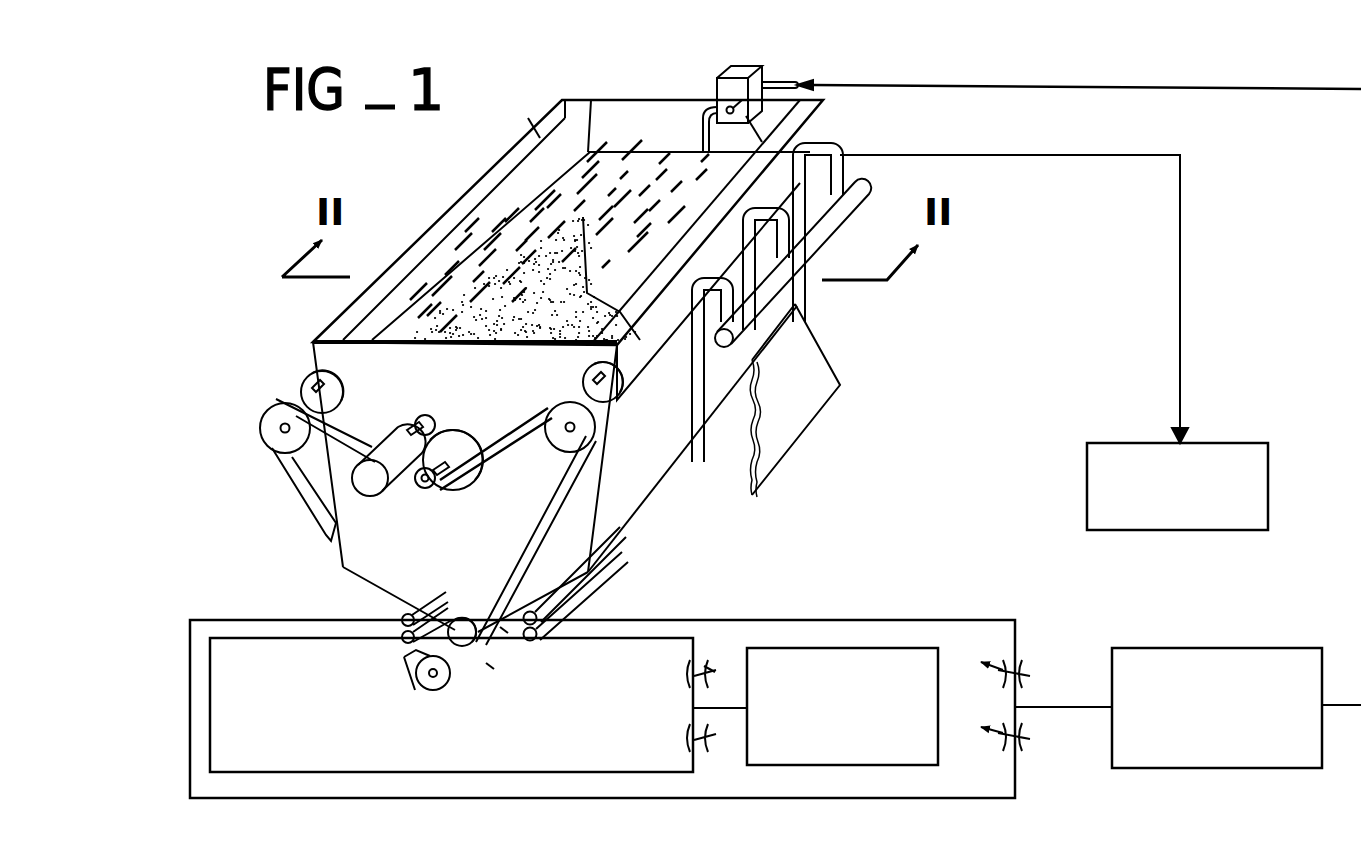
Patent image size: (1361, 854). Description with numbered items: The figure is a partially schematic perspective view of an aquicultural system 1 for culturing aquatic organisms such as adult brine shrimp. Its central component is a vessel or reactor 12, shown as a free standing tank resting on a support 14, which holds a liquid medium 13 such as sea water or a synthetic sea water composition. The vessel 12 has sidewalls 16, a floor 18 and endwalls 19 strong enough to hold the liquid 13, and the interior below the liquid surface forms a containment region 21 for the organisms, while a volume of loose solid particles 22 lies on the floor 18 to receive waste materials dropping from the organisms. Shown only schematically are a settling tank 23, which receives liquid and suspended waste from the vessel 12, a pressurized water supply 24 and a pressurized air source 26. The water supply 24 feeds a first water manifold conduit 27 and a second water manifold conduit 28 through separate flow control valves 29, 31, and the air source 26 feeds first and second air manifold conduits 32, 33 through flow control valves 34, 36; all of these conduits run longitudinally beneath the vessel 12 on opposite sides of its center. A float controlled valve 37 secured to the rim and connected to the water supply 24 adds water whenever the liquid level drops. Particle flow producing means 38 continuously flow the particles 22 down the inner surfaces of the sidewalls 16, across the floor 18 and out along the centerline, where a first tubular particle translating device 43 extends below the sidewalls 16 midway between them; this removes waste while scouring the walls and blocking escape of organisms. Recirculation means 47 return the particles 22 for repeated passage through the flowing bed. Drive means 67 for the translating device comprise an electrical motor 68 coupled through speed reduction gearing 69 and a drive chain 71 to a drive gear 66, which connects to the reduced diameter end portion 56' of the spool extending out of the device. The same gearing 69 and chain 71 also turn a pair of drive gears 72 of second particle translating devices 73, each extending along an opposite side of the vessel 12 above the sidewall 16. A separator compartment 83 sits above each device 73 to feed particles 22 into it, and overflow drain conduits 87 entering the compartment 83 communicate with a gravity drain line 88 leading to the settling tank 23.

The apparatus 1 is at (1310, 80).
The vessel or reactor 12 is at (478, 151).
The liquid medium 13 is at (617, 165).
The support 14 is at (808, 394).
The sidewalls 16 is at (650, 469).
The floor 18 is at (370, 590).
The endwalls 19 is at (506, 377).
The containment region 21 is at (634, 255).
The loose solid particles 22 is at (526, 279).
The settling tank 23 is at (1236, 443).
The pressurized water supply 24 is at (1268, 648).
The pressurized air source 26 is at (856, 766).
The first water manifold conduit 27 is at (558, 600).
The second water manifold conduit 28 is at (412, 612).
The flow control valve 29 is at (1038, 672).
The flow control valve 31 is at (1040, 746).
The first air manifold conduit 32 is at (630, 527).
The second air manifold conduit 33 is at (432, 618).
The flow control valve 34 is at (713, 670).
The flow control valve 36 is at (722, 742).
The float controlled valve 37 is at (756, 68).
The particle flow producing means 38 is at (492, 668).
The first tubular particle translating device 43 is at (505, 634).
The recirculation means 47 is at (703, 400).
The reduced diameter end portion 56' is at (522, 589).
The drive gear 66 is at (427, 690).
The drive means 67 is at (386, 420).
The electrical motor 68 is at (373, 488).
The speed reduction gearing 69 is at (479, 443).
The drive chain 71 is at (303, 503).
The drive gears 72 is at (268, 426).
The second particle translating devices 73 is at (304, 376).
The separator compartment 83 is at (519, 112).
The overflow drain conduits 87 is at (835, 145).
The gravity drain line 88 is at (850, 208).